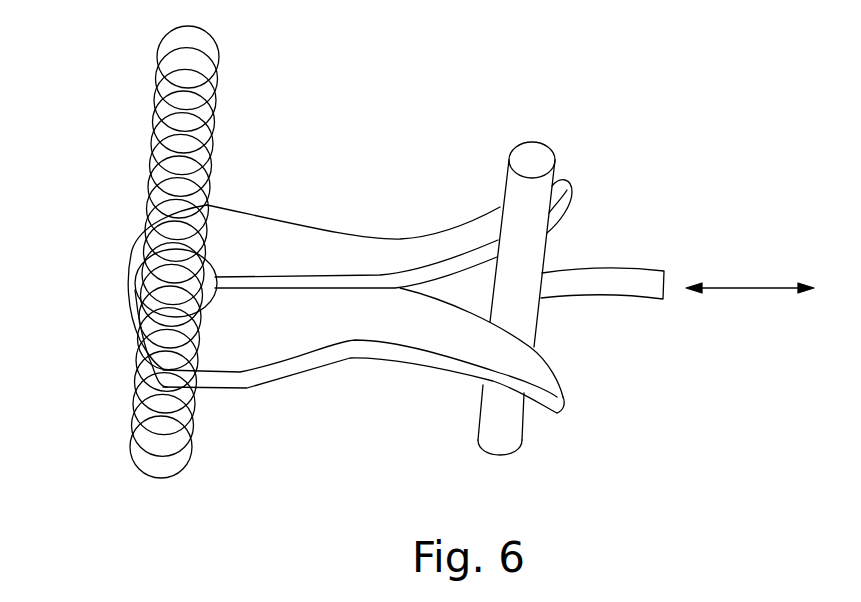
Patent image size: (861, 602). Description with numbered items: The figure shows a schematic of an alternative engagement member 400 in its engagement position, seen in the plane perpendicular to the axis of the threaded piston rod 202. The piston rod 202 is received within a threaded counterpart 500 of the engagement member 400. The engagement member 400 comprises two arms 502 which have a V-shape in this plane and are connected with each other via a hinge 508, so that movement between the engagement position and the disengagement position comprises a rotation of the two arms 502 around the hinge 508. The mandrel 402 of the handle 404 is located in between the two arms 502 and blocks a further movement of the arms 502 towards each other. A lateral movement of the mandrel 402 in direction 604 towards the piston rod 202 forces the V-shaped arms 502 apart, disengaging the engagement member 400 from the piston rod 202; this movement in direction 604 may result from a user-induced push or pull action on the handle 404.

The threaded piston rod 202 is at (150, 106).
The engagement member 400 is at (133, 258).
The threaded counterpart 500 is at (173, 285).
The hinge 508 is at (137, 285).
The arms 502 is at (316, 246).
The mandrel 402 is at (545, 258).
The handle 404 is at (645, 286).
The direction 604 is at (749, 282).